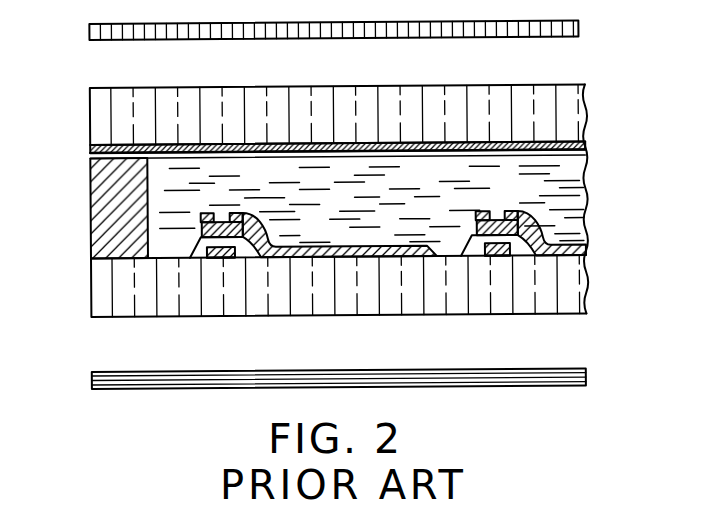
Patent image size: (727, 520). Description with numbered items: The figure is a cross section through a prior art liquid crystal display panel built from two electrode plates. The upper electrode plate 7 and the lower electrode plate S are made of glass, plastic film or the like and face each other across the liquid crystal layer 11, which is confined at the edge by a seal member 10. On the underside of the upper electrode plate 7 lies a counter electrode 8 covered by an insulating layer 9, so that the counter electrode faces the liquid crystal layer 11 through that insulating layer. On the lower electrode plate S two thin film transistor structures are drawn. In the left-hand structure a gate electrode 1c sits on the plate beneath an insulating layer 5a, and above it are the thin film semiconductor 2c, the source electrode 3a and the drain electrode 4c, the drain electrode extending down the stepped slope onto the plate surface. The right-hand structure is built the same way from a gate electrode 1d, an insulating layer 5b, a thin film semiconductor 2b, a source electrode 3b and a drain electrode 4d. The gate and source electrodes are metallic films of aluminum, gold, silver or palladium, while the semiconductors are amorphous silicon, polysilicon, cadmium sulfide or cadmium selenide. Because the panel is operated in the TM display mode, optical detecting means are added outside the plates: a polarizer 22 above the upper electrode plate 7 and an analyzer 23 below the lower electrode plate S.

The polarizer 22 is at (582, 27).
The electrode plate 7 is at (586, 108).
The counter electrode 8 is at (586, 141).
The insulating layer 9 is at (586, 152).
The liquid crystal layer 11 is at (586, 197).
The seal member 10 is at (105, 218).
The drain electrode 4d is at (586, 246).
The electrode plate S is at (578, 281).
The analyzer 23 is at (586, 374).
The drain electrode 4c is at (372, 251).
The source electrode 3a is at (206, 216).
The thin film semiconductor 2c is at (207, 224).
The insulating layer 5a is at (238, 259).
The gate electrode 1c is at (214, 260).
The source electrode 3b is at (483, 213).
The thin film semiconductor 2b is at (502, 213).
The insulating layer 5b is at (481, 246).
The gate electrode 1d is at (500, 249).